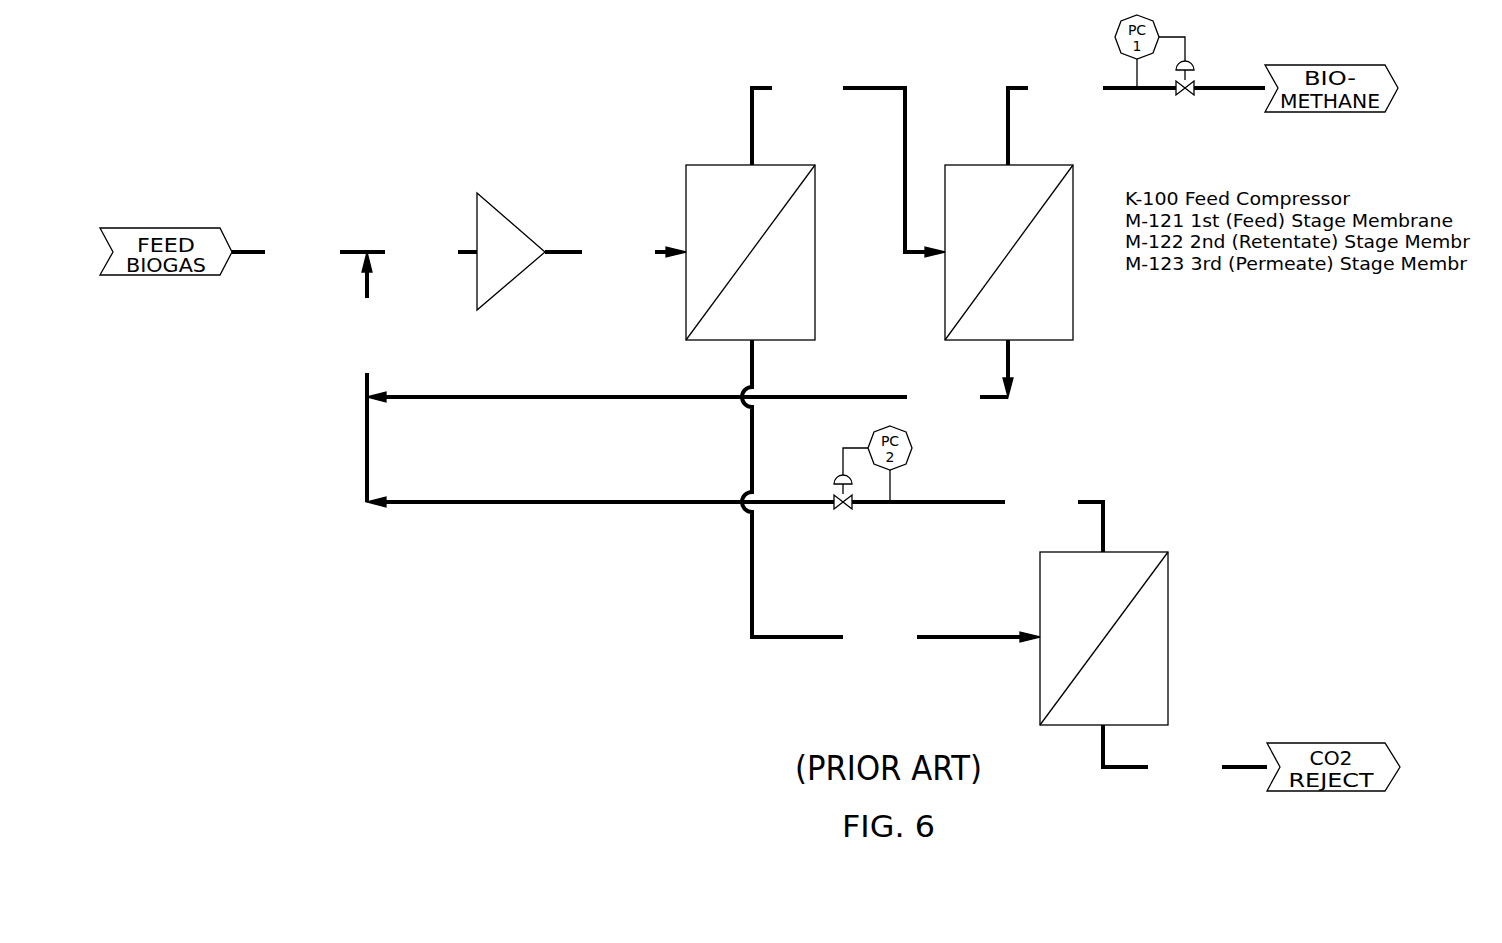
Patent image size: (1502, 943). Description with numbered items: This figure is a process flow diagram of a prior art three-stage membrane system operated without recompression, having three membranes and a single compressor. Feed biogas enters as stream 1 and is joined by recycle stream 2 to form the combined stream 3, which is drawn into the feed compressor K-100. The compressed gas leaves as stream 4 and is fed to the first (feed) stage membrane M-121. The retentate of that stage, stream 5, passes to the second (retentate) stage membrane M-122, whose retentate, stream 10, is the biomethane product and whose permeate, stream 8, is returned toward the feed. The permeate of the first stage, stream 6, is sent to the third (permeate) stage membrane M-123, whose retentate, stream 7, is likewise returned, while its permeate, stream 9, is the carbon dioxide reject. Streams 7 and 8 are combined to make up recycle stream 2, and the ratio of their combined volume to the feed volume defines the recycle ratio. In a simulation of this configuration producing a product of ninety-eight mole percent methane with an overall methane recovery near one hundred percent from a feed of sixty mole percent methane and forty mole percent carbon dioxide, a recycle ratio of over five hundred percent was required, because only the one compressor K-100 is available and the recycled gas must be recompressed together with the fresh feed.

The feed biogas stream 1 is at (308, 252).
The recycle stream 2 is at (367, 377).
The combined feed stream to compressor 3 is at (431, 252).
The compressed feed stream 4 is at (615, 252).
The first stage retentate stream 5 is at (848, 161).
The first stage permeate stream 6 is at (891, 500).
The recycle stream 7 is at (735, 514).
The recycle stream 8 is at (690, 380).
The CO2 reject stream 9 is at (1185, 758).
The biomethane product stream 10 is at (1136, 115).
The feed compressor K-100 is at (483, 211).
The first (feed) stage membrane M-121 is at (750, 252).
The second (retentate) stage membrane M-122 is at (1009, 252).
The third (permeate) stage membrane M-123 is at (1104, 638).